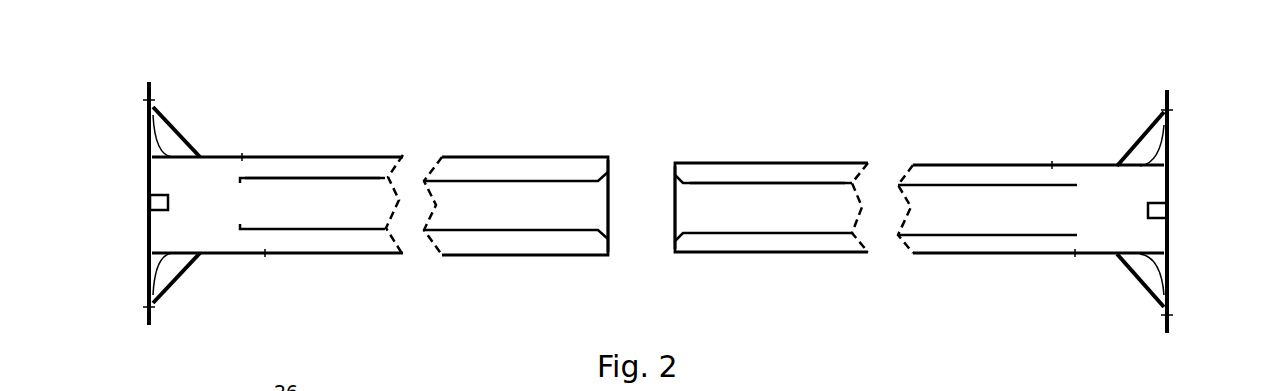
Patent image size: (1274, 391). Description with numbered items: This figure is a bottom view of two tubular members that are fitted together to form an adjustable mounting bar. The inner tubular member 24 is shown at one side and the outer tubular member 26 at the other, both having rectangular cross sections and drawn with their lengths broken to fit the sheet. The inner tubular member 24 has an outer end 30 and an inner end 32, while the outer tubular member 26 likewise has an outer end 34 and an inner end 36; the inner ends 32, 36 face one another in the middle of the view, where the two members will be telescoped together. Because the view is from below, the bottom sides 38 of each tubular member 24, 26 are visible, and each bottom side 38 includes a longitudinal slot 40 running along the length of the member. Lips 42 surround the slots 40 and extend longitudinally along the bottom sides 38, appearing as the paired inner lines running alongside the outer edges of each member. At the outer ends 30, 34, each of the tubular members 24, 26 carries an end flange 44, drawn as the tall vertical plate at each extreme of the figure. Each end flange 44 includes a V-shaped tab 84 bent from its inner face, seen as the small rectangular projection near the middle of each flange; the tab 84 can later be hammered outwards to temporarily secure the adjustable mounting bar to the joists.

The inner tubular member 24 is at (975, 125).
The outer tubular member 26 is at (310, 123).
The outer end 30 is at (1170, 172).
The inner end 32 is at (677, 208).
The outer end 34 is at (145, 177).
The inner end 36 is at (608, 205).
The bottom side 38 is at (224, 220).
The longitudinal slot 40 is at (335, 205).
The lip 42 is at (517, 243).
The end flange 44 is at (145, 93).
The V-shaped tab 84 is at (157, 203).